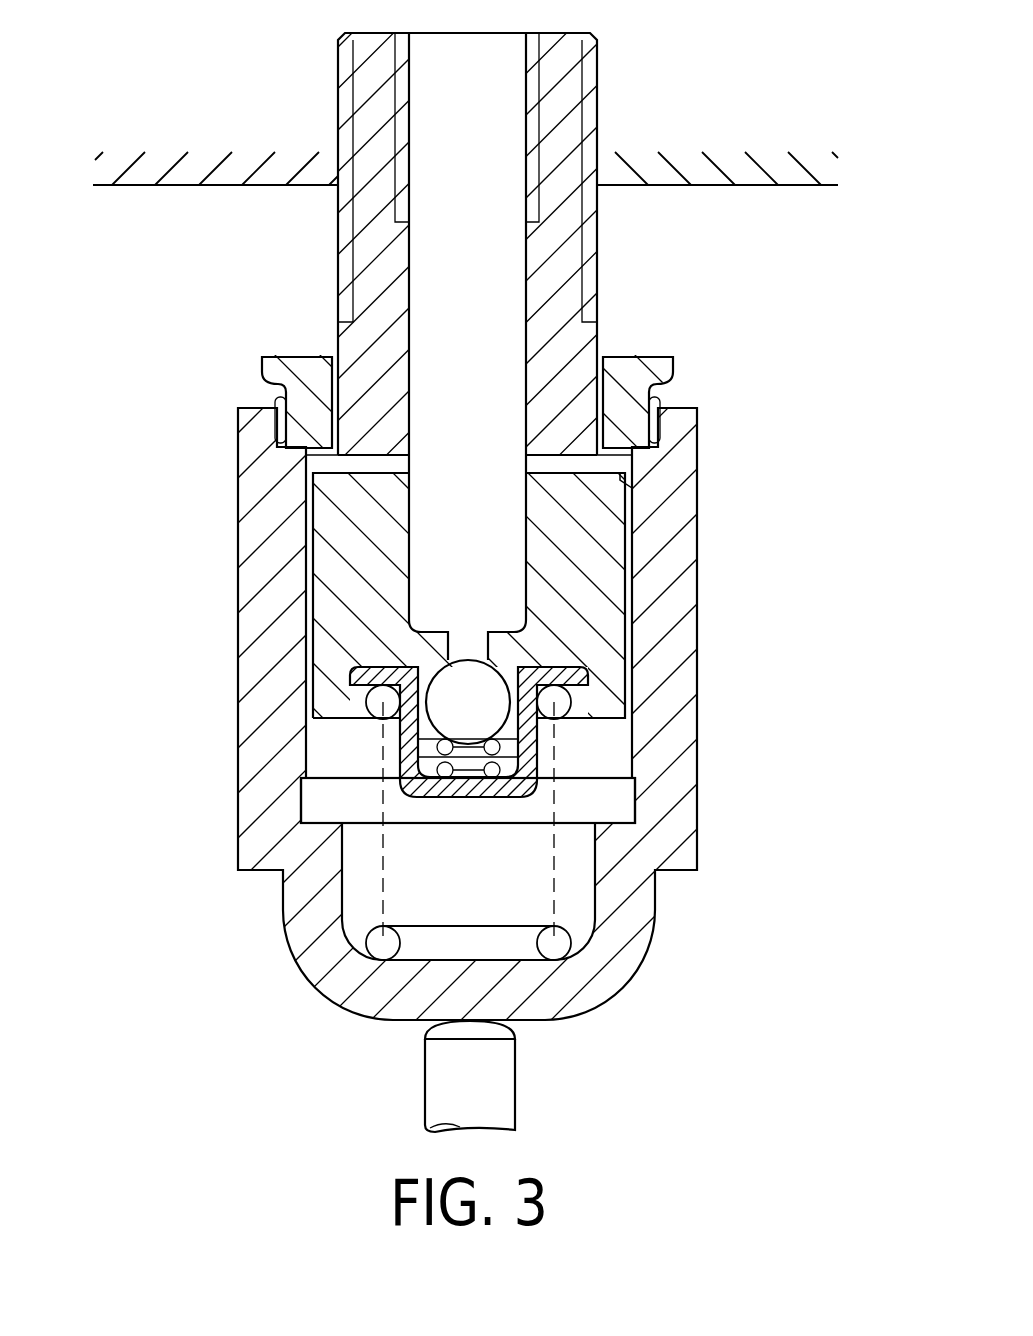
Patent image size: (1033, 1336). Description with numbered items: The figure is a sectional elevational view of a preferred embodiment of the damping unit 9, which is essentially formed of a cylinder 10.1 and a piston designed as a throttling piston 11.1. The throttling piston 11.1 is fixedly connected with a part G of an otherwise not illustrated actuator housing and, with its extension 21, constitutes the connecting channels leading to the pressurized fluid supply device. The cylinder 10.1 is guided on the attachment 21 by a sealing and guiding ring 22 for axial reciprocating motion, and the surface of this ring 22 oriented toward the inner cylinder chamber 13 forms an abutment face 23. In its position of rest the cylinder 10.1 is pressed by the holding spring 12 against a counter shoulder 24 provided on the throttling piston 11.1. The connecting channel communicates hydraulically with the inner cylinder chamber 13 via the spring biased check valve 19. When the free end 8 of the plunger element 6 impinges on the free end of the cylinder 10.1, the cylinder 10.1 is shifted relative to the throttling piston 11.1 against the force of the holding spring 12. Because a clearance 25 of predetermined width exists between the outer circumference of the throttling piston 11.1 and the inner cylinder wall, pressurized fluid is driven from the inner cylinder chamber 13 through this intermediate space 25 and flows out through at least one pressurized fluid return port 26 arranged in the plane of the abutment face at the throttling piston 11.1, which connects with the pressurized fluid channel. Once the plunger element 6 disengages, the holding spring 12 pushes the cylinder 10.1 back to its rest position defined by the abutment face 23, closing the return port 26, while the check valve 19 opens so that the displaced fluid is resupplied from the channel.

The part of actuator housing G is at (793, 175).
The extension 21 is at (570, 253).
The sealing and guiding ring 22 is at (303, 373).
The abutment face 23 is at (335, 465).
The counter shoulder 24 is at (617, 478).
The pressurized fluid return port 26 is at (555, 455).
The cylinder 10.1 is at (683, 577).
The throttling piston 11.1 is at (612, 540).
The clearance 25 is at (615, 687).
The spring biased check valve 19 is at (505, 735).
The inner cylinder chamber 13 is at (330, 743).
The holding spring 12 is at (383, 880).
The free end 8 is at (497, 1048).
The plunger element 6 is at (538, 1100).
The damping unit 9 is at (138, 726).